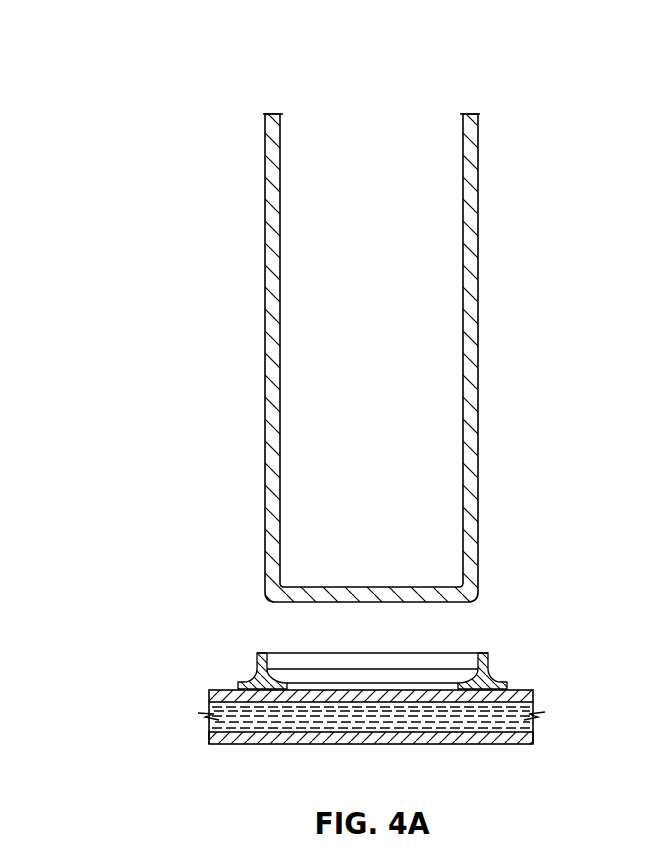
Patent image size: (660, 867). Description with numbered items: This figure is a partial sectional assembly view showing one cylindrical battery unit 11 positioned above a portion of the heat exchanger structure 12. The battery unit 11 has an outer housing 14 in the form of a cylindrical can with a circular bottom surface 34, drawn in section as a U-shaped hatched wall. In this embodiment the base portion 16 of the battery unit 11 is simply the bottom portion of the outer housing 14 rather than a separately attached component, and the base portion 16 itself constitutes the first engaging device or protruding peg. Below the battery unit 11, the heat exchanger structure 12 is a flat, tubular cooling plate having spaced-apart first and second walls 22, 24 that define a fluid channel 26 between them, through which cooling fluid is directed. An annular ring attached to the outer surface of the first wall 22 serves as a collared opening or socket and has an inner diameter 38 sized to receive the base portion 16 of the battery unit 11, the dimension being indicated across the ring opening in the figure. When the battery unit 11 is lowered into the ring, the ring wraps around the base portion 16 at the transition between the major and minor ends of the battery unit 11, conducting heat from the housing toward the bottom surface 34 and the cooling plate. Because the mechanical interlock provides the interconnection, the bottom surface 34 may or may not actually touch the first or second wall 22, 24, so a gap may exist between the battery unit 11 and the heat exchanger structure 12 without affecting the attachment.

The battery unit 11 is at (507, 114).
The heat exchanger structure 12 is at (160, 691).
The outer housing 14 is at (477, 343).
The base portion 16 is at (483, 550).
The first wall 22 is at (222, 692).
The second wall 24 is at (232, 745).
The fluid channel 26 is at (522, 712).
The bottom surface 34 is at (292, 603).
The inner diameter 38 is at (268, 627).